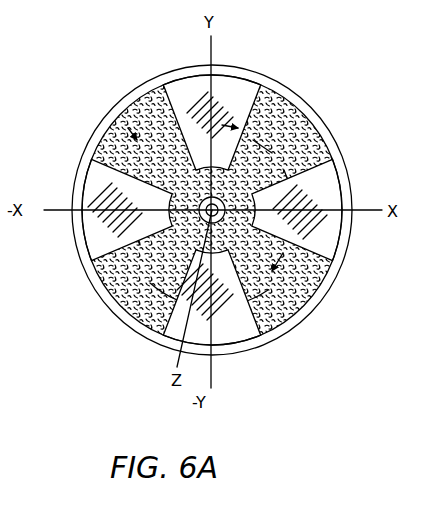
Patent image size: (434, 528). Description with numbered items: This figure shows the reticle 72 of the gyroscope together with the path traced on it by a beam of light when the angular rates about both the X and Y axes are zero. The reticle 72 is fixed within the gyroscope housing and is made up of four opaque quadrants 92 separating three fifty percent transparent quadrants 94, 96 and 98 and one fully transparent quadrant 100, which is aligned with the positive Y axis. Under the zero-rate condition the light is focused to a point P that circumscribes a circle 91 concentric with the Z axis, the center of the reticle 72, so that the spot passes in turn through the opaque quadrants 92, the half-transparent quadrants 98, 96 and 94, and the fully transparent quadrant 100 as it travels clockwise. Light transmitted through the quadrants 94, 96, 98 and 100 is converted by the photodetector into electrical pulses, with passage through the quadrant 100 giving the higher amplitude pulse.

The reticle 72 is at (302, 84).
The circle 91 is at (325, 166).
The opaque quadrants 92 is at (128, 116).
The 50% transparent quadrant 94 is at (90, 247).
The 50% transparent quadrant 96 is at (240, 338).
The 50% transparent quadrant 98 is at (346, 249).
The 100% transparent quadrant 100 is at (255, 88).